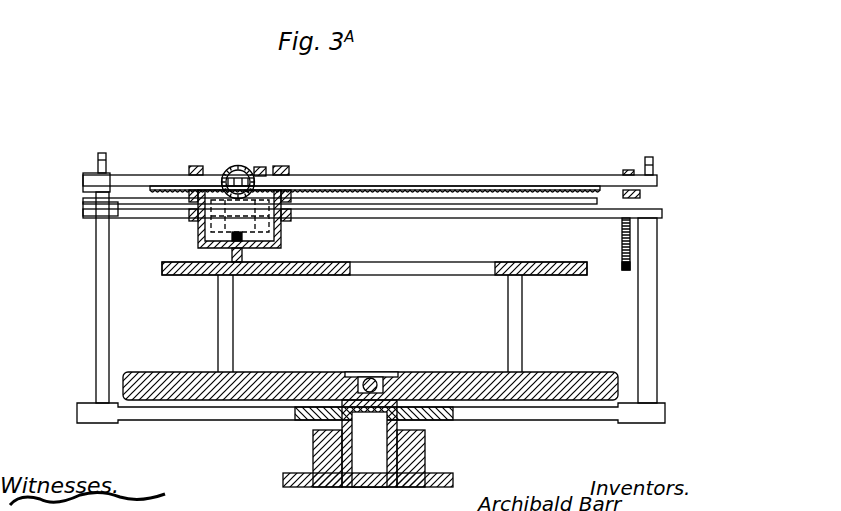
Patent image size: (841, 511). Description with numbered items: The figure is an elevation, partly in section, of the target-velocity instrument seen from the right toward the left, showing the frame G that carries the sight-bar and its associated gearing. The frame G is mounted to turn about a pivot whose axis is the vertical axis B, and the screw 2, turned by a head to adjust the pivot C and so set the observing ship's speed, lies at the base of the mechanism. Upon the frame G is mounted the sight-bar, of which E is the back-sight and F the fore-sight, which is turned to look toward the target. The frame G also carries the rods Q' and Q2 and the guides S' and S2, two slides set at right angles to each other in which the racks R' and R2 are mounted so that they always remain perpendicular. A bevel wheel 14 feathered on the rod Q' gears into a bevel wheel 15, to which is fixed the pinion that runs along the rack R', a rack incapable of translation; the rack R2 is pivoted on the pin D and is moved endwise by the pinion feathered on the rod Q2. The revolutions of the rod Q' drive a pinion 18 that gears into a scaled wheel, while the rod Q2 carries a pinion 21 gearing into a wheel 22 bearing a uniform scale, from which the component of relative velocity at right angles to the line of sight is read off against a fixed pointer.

The screw 2 is at (376, 371).
The bevel wheel 14 is at (240, 158).
The bevel wheel 15 is at (264, 162).
The pinion 18 is at (626, 163).
The pinion 21 is at (617, 220).
The wheel 22 is at (622, 272).
The back-sight E is at (115, 152).
The fore-sight F is at (657, 152).
The frame G is at (114, 318).
The rod Q' is at (370, 151).
The rod Q2 is at (439, 222).
The rack R' is at (375, 154).
The rack R2 is at (251, 265).
The slide S' is at (262, 145).
The slide S2 is at (228, 250).